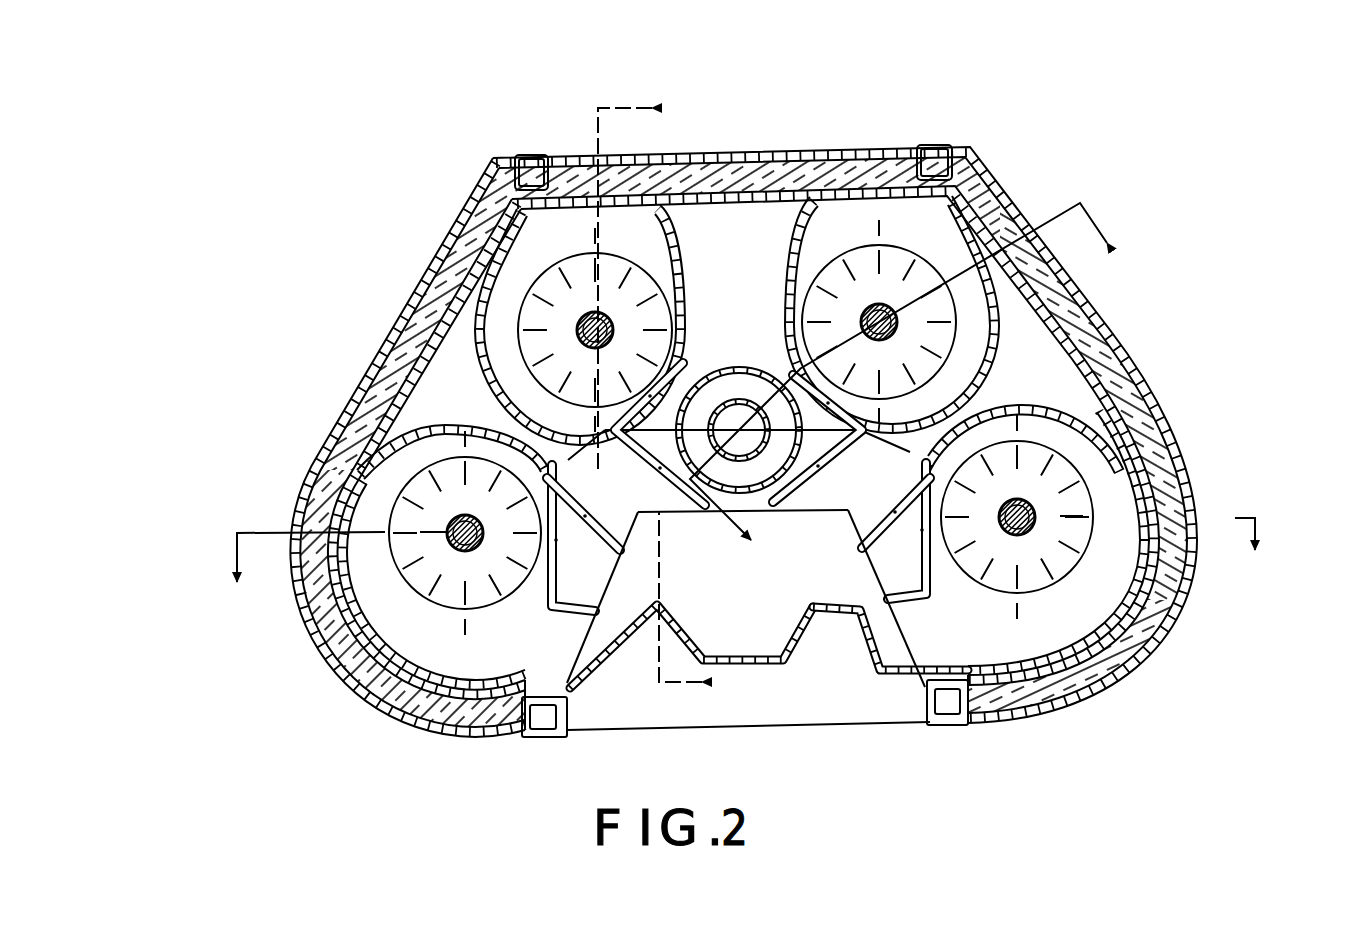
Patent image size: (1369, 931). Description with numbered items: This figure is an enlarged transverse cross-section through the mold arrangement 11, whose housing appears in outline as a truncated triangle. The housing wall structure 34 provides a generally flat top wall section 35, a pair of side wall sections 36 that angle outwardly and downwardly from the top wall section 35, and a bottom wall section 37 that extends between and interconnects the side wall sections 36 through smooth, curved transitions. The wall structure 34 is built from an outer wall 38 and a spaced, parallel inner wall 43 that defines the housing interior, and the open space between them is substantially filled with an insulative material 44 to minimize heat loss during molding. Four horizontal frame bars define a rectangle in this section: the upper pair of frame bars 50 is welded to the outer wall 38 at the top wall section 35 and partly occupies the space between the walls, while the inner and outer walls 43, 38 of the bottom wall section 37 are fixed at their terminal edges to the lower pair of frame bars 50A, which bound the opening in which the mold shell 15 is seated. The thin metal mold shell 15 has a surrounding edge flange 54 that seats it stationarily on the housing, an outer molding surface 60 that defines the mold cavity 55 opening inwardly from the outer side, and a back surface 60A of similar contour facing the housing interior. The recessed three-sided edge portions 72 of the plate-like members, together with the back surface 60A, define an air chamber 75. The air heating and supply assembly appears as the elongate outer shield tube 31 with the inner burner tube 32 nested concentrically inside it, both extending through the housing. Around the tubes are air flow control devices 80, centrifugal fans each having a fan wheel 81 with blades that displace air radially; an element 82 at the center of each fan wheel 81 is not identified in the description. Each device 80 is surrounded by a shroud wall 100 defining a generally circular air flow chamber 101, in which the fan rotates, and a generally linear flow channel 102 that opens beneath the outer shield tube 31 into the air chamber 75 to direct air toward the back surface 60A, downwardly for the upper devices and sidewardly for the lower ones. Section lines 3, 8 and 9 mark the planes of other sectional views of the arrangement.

The mold arrangement 11 is at (888, 68).
The mold shell 15 is at (772, 700).
The outer shield tube 31 is at (740, 366).
The inner burner tube 32 is at (742, 460).
The wall structure 34 is at (342, 335).
The top wall section 35 is at (807, 143).
The side wall sections 36 is at (342, 392).
The bottom wall section 37 is at (470, 737).
The outer wall 38 is at (462, 208).
The inner wall 43 is at (455, 290).
The insulative material 44 is at (437, 305).
The upper frame bars 50 is at (524, 152).
The lower frame bars 50A is at (540, 740).
The edge flange 54 is at (955, 716).
The mold cavity 55 is at (840, 620).
The outer molding surface 60 is at (789, 664).
The back surface 60A is at (713, 657).
The edge portion 72 is at (592, 652).
The air chamber 75 is at (830, 596).
The air flow control devices 80 is at (645, 262).
The fan wheel 81 is at (398, 589).
The fan shaft 82 is at (878, 312).
The shroud wall 100 is at (475, 372).
The air flow chamber 101 is at (498, 245).
The linear flow channel 102 is at (640, 505).
The section line 3- 3 is at (741, 540).
The section line 8- 8 is at (628, 398).
The section line 9- 9 is at (913, 377).